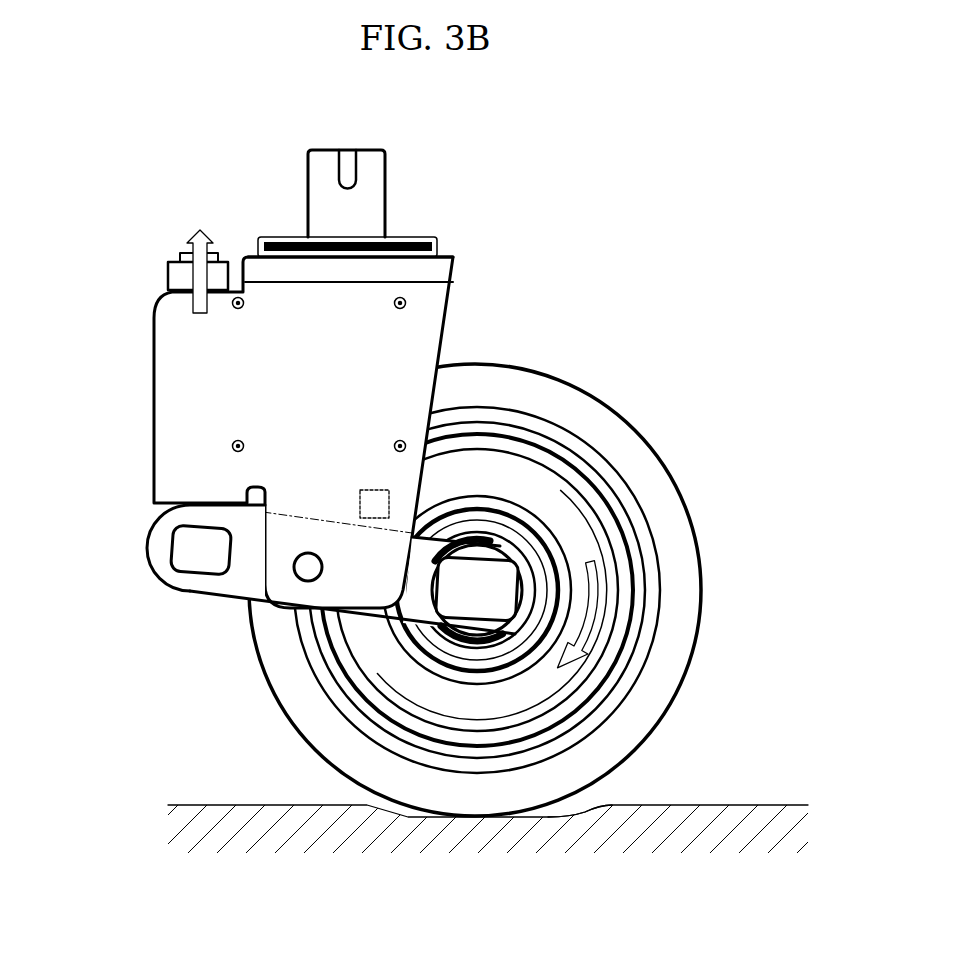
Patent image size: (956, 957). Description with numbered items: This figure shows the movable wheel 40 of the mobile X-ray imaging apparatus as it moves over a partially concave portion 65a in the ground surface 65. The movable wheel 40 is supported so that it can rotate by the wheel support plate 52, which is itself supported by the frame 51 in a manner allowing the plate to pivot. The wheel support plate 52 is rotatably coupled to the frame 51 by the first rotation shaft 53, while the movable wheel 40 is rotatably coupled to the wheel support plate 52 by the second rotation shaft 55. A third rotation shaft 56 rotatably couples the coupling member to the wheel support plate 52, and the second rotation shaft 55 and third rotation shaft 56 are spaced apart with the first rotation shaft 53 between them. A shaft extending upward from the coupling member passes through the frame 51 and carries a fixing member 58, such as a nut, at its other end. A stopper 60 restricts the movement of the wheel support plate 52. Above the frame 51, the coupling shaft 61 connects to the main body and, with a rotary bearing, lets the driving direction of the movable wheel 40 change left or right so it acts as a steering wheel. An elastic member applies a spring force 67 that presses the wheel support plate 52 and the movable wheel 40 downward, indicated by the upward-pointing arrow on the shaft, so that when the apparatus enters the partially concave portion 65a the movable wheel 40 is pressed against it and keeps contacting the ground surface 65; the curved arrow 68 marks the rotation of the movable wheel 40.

The movable wheel 40 is at (570, 400).
The frame 51 is at (175, 408).
The wheel support plate 52 is at (212, 588).
The first rotation shaft 53 is at (308, 567).
The second rotation shaft 55 is at (458, 600).
The third rotation shaft 56 is at (183, 547).
The fixing member 58 is at (177, 273).
The stopper 60 is at (389, 490).
The coupling shaft 61 is at (385, 186).
The ground surface 65 is at (787, 808).
The partially concave portion 65a is at (590, 808).
The spring force 67 is at (198, 307).
The rotation direction 68 is at (592, 565).